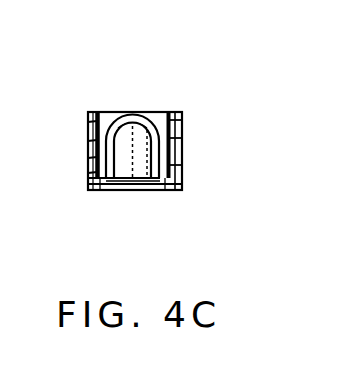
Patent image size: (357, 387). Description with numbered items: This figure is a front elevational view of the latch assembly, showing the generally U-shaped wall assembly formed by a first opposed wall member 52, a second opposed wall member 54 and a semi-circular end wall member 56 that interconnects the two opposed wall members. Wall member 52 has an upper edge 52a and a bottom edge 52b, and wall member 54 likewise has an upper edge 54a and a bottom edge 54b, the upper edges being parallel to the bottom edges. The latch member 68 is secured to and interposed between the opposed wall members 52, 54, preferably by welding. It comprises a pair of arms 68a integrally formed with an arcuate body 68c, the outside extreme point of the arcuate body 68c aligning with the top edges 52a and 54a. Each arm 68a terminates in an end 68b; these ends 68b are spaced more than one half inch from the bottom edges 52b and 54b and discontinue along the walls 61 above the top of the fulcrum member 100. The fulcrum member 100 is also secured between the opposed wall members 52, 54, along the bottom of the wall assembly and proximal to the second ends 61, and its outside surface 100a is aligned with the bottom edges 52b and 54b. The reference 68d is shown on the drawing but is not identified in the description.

The first opposed wall member 52 is at (181, 121).
The upper edge of first opposed wall member 52a is at (170, 115).
The bottom edge of first opposed wall member 52b is at (164, 192).
The second opposed wall member 54 is at (88, 113).
The upper edge of second opposed wall member 54a is at (92, 116).
The bottom edge of second opposed wall member 54b is at (100, 186).
The semi-circular end wall member 56 is at (100, 137).
The second end of second opposed wall member 61 is at (92, 174).
The latch member 68 is at (154, 123).
The arms of latch member 68a is at (107, 153).
The ends of arms 68b is at (105, 190).
The arcuate body 68c is at (137, 113).
The inner arch 68d is at (128, 120).
The fulcrum member 100 is at (145, 183).
The outside surface of fulcrum member 100a is at (133, 188).